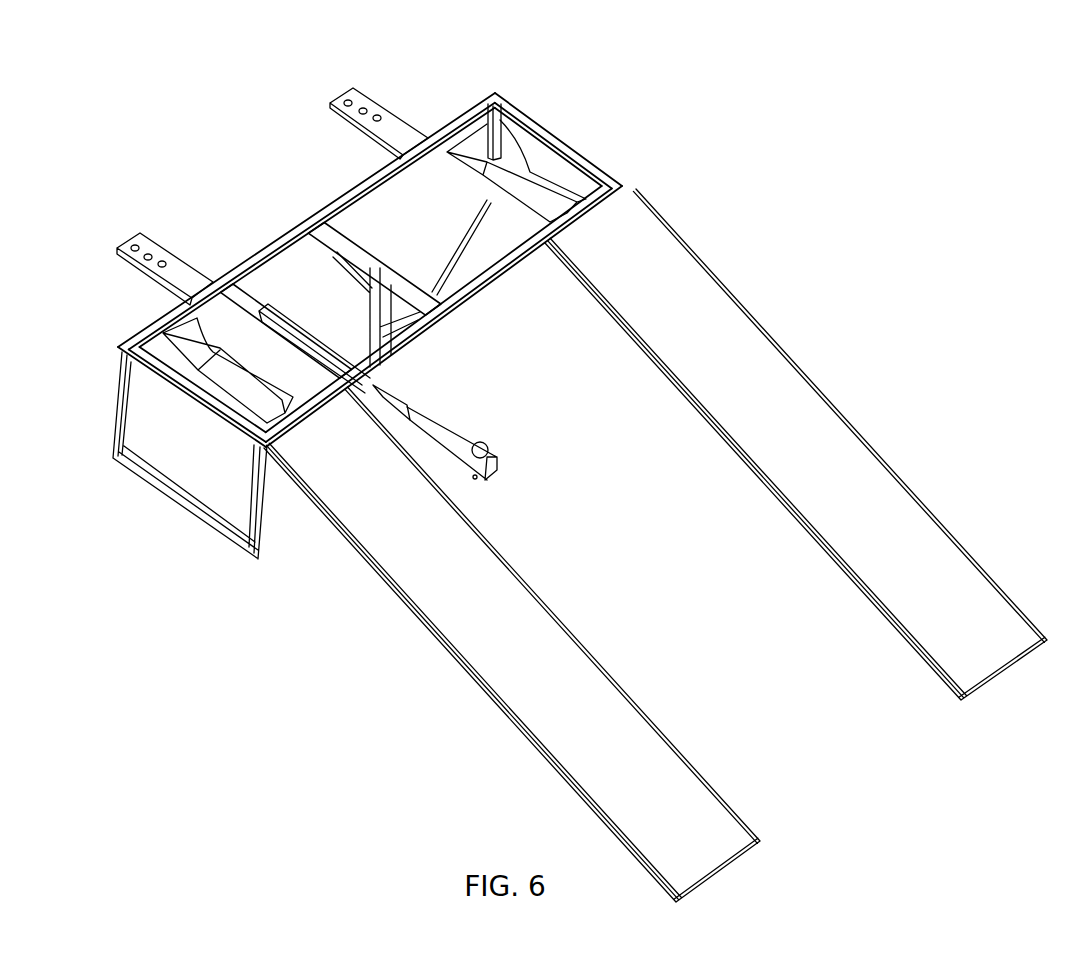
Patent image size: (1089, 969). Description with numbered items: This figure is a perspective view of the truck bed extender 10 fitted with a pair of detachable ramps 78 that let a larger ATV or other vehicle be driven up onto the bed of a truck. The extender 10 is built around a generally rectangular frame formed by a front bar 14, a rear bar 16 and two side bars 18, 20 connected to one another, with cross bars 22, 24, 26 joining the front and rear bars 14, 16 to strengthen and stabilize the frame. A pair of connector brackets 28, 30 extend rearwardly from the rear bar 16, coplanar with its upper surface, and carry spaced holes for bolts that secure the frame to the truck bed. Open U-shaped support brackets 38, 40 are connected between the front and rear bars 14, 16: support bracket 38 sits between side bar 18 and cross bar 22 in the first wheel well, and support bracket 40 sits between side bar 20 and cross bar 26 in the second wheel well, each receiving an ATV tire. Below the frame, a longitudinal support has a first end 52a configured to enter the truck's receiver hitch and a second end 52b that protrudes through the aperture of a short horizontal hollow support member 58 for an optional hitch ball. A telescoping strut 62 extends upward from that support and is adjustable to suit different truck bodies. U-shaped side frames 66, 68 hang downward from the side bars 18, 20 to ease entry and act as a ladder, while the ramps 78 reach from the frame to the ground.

The truck bed extender 10 is at (590, 99).
The front bar 14 is at (507, 273).
The rear bar 16 is at (357, 192).
The side bar 18 is at (153, 367).
The side bar 20 is at (625, 185).
The cross bar 22 is at (257, 310).
The cross bar 24 is at (340, 235).
The cross bar 26 is at (512, 216).
The connector bracket 28 is at (183, 280).
The connector bracket 30 is at (390, 122).
The support bracket 38 is at (237, 387).
The support bracket 40 is at (520, 187).
The first end of longitudinal support 52a is at (275, 305).
The second end of longitudinal support 52b is at (453, 430).
The hollow support member 58 is at (395, 398).
The telescoping strut 62 is at (372, 306).
The side frame 66 is at (272, 528).
The side frame 68 is at (500, 122).
The ramp 78 is at (505, 597).